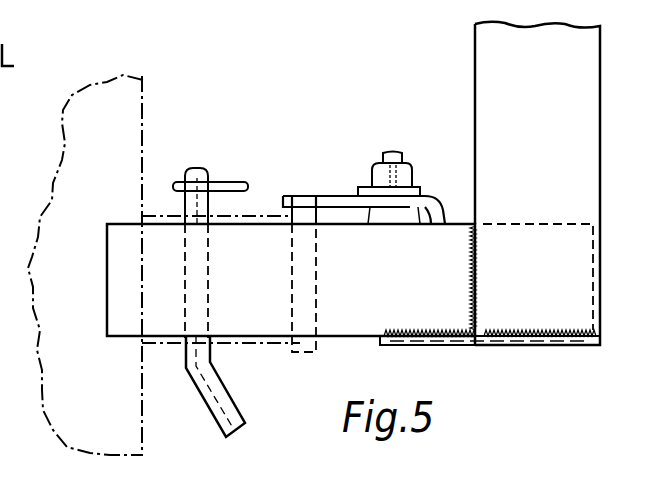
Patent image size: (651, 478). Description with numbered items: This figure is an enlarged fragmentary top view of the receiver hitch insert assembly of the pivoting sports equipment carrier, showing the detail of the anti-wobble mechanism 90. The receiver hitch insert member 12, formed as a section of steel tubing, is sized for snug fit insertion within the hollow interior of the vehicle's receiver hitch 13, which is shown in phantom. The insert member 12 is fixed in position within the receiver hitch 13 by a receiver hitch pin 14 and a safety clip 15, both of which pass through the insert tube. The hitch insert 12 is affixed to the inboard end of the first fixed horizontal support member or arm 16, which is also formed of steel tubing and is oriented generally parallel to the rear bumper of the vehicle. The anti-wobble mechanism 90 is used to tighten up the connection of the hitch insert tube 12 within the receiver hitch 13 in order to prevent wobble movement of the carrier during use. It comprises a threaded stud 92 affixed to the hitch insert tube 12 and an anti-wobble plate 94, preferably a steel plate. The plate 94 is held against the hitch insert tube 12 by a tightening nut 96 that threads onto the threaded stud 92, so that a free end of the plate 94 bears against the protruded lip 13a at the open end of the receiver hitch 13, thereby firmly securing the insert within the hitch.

The receiver hitch insert member 12 is at (380, 296).
The receiver hitch 13 is at (153, 212).
The protruded lip 13a is at (306, 194).
The receiver hitch pin 14 is at (236, 408).
The safety clip 15 is at (233, 187).
The first fixed horizontal support member 16 is at (542, 156).
The anti-wobble mechanism 90 is at (366, 155).
The threaded stud 92 is at (391, 149).
The anti-wobble plate 94 is at (321, 192).
The tightening nut 96 is at (410, 185).